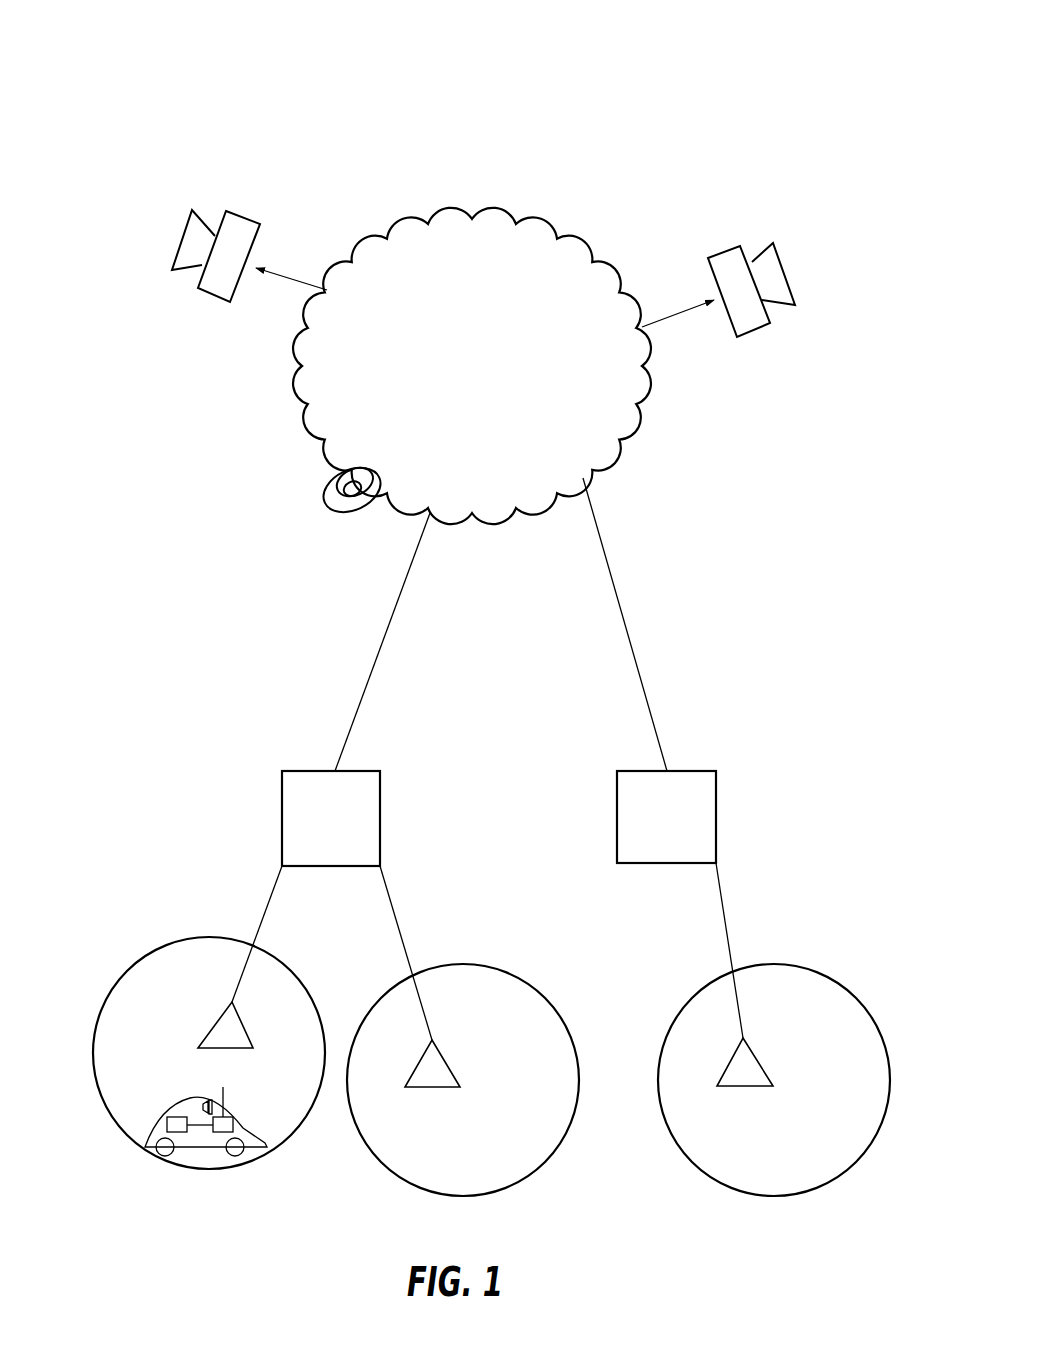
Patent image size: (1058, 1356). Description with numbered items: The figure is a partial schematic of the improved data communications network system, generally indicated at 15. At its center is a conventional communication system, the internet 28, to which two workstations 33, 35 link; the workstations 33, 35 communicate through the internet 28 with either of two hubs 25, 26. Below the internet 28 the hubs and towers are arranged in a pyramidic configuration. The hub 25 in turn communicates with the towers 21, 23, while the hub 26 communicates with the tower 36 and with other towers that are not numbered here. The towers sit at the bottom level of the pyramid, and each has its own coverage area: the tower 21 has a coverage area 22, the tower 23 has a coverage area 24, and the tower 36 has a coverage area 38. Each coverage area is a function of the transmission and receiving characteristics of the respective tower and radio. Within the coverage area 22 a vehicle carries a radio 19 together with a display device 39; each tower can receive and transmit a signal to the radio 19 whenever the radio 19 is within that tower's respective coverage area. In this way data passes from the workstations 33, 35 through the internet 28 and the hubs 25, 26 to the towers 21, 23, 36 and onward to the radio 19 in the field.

The data communications network system 15 is at (683, 113).
The radio 19 is at (223, 1128).
The tower 21 is at (232, 1027).
The coverage area 22 is at (168, 1190).
The tower 23 is at (432, 1075).
The coverage area 24 is at (463, 1080).
The hub 25 is at (331, 818).
The hub 26 is at (666, 817).
The internet 28 is at (472, 366).
The workstation 33 is at (748, 312).
The workstation 35 is at (215, 282).
The tower 36 is at (742, 1067).
The coverage area 38 is at (774, 1080).
The display device 39 is at (208, 1105).